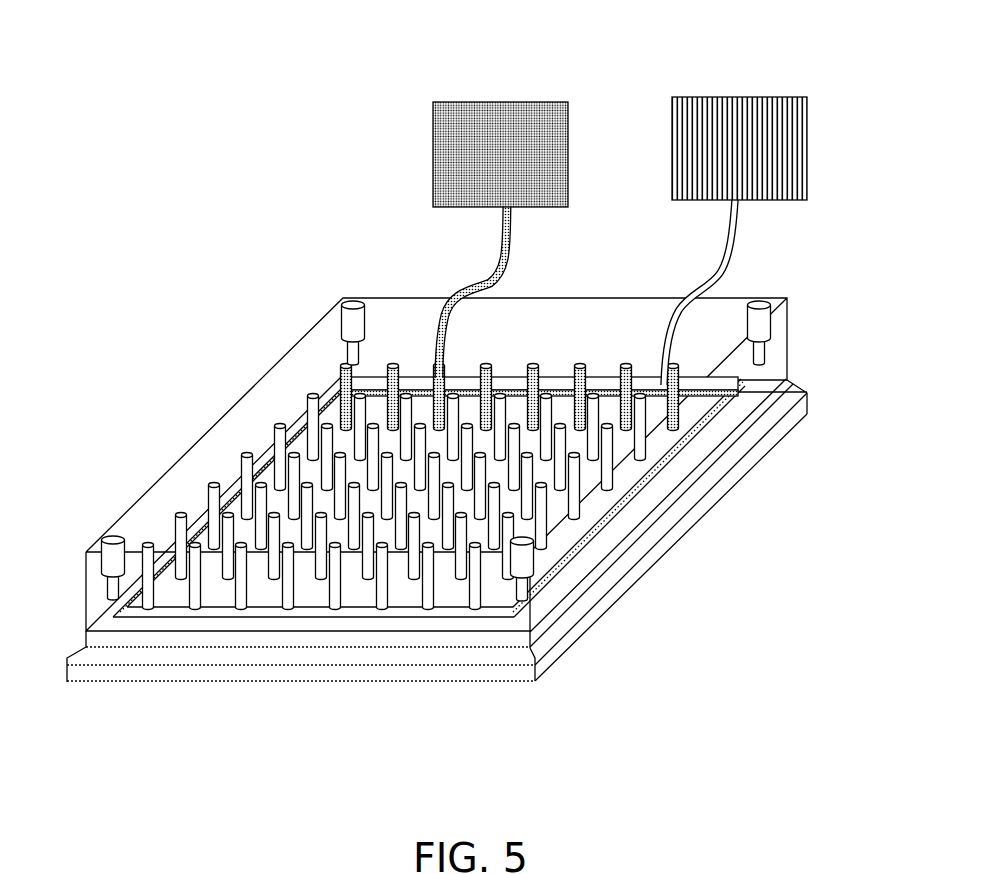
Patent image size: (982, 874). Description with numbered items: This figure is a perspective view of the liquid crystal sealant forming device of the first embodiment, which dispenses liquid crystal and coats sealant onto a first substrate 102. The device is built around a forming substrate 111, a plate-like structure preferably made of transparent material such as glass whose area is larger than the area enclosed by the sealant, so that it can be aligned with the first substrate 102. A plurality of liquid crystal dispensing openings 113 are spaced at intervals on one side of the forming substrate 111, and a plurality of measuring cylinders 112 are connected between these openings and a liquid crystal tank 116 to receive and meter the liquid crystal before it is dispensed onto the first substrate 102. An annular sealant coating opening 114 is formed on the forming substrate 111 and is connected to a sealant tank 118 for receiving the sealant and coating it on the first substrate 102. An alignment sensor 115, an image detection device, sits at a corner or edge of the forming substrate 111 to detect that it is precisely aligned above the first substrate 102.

The first substrate 102 is at (455, 682).
The forming substrate 111 is at (86, 590).
The measuring cylinders 112 is at (502, 384).
The liquid crystal dispensing openings 113 is at (186, 582).
The sealant coating opening 114 is at (210, 610).
The alignment sensor 115 is at (115, 538).
The liquid crystal tank 116 is at (503, 125).
The sealant tank 118 is at (732, 110).